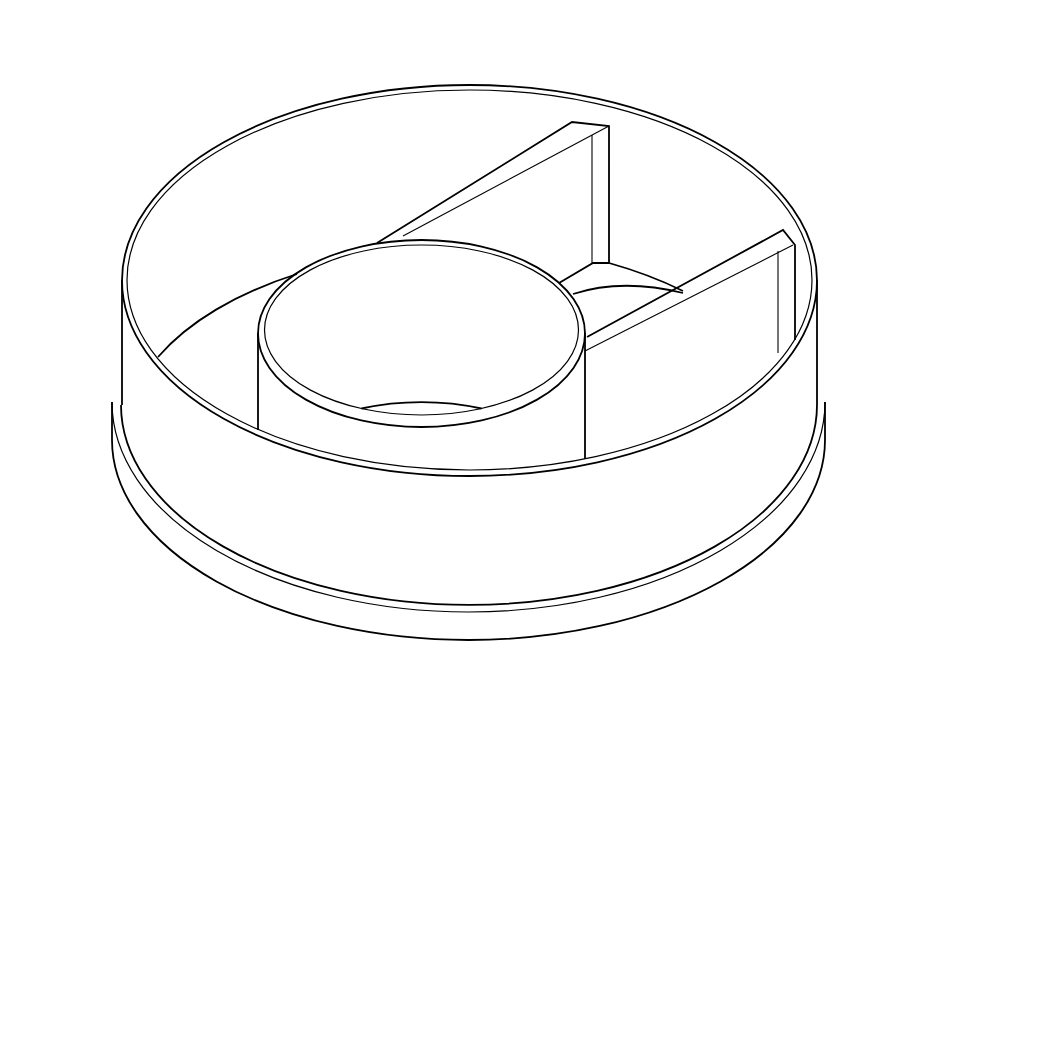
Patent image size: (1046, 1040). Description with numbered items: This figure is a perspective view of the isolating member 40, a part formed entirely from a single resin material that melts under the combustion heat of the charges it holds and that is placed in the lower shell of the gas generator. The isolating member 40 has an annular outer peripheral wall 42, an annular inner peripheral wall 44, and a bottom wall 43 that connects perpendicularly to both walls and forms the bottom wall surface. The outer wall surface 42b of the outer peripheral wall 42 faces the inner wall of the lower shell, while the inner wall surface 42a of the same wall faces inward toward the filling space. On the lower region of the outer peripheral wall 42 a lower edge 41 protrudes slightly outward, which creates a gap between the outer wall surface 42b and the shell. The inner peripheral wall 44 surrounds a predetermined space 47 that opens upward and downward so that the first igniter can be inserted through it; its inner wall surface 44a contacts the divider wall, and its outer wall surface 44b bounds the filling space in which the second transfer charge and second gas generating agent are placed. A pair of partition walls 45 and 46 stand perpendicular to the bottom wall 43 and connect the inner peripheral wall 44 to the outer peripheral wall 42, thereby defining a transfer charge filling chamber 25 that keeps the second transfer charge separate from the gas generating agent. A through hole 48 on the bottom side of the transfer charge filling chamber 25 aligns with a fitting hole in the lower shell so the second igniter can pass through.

The transfer charge filling chamber 25 is at (558, 249).
The isolating member 40 is at (123, 698).
The lower edge 41 is at (390, 622).
The outer peripheral wall 42 is at (593, 553).
The inner wall surface of the outer peripheral wall 42a is at (265, 207).
The outer wall surface of the outer peripheral wall 42b is at (468, 565).
The bottom wall 43 is at (205, 340).
The inner peripheral wall 44 is at (268, 335).
The inner wall surface of the inner peripheral wall 44a is at (391, 345).
The outer wall surface of the inner peripheral wall 44b is at (528, 449).
The partition wall 45 is at (707, 282).
The partition wall 46 is at (517, 178).
The predetermined space 47 is at (408, 410).
The through hole 48 is at (617, 308).